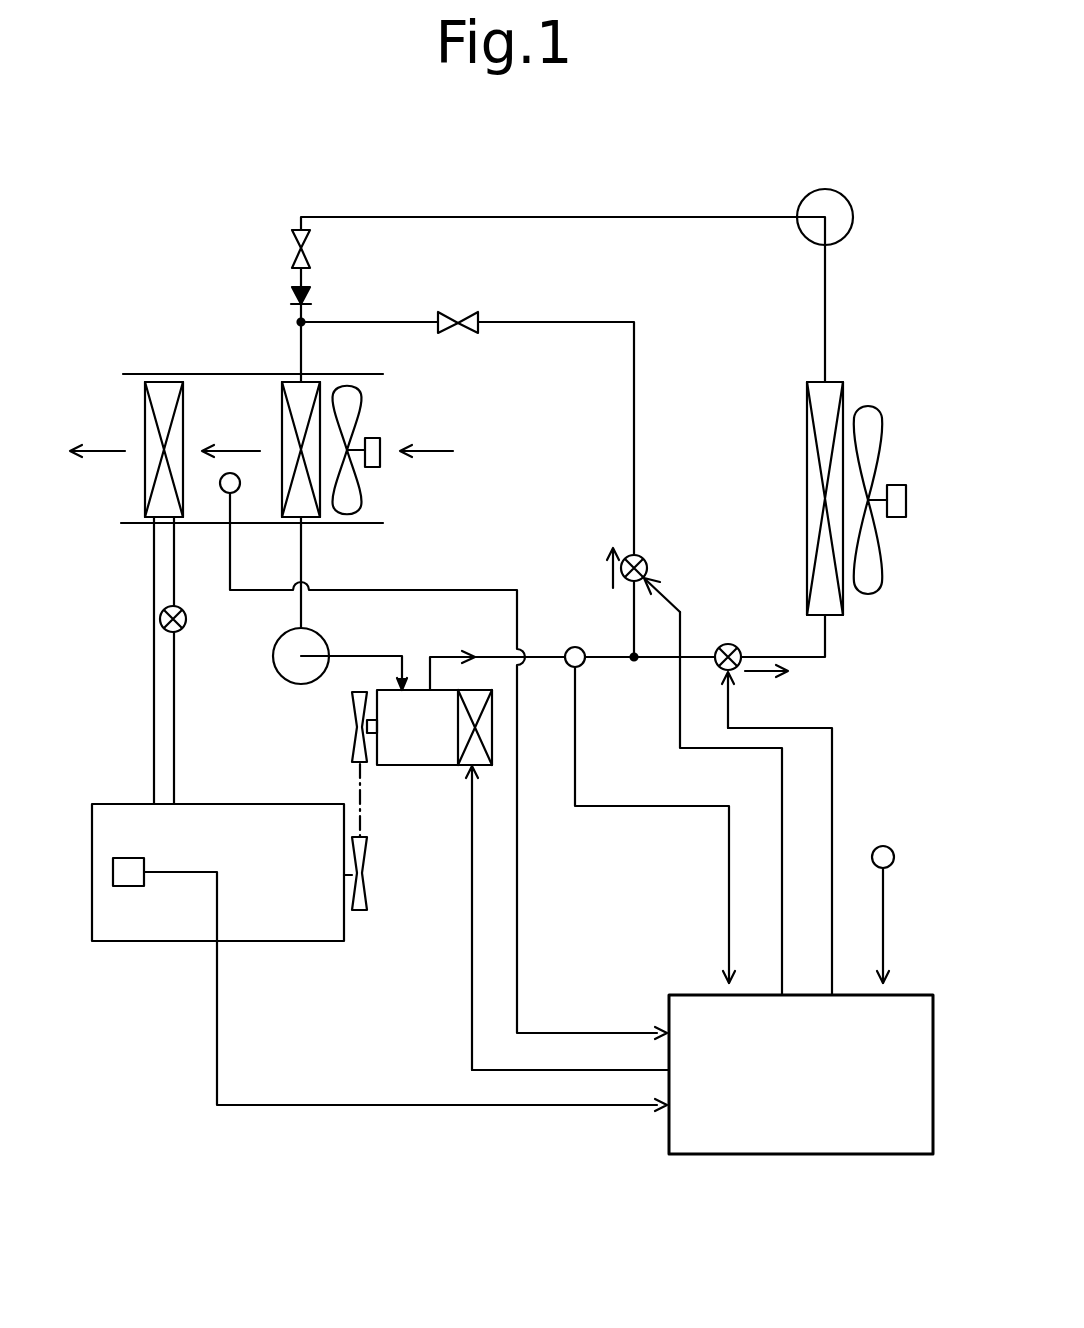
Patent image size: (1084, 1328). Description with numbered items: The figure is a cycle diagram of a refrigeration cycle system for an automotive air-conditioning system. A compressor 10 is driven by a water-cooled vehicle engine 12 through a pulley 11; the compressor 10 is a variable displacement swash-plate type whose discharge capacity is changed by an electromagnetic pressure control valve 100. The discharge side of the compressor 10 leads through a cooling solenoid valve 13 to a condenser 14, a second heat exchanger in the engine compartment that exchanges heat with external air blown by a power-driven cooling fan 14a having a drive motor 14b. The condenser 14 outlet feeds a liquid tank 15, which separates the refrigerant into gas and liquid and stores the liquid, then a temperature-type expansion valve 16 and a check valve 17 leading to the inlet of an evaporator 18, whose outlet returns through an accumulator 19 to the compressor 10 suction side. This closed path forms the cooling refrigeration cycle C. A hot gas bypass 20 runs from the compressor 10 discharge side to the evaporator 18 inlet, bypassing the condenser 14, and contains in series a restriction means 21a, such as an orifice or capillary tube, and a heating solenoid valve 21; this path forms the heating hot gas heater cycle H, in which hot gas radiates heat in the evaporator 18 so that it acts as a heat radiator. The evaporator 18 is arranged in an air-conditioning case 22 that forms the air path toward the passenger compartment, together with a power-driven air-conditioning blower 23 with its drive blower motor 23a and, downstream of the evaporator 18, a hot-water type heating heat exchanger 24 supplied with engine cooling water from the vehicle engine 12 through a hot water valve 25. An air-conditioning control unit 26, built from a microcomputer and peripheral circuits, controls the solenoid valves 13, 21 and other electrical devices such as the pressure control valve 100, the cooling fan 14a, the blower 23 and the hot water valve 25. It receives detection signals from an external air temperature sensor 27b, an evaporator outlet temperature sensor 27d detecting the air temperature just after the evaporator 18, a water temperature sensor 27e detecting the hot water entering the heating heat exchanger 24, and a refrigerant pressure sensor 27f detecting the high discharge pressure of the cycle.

The compressor 10 is at (518, 880).
The electromagnetic pressure control valve 100 is at (488, 736).
The pulley 11 is at (352, 732).
The vehicle engine 12 is at (155, 941).
The cooling solenoid valve 13 is at (728, 644).
The condenser 14 is at (807, 420).
The cooling fan 14a is at (870, 402).
The drive motor 14b is at (897, 485).
The liquid tank 15 is at (848, 196).
The temperature-type expansion valve 16 is at (292, 243).
The check valve 17 is at (292, 297).
The evaporator 18 is at (293, 390).
The accumulator 19 is at (324, 644).
The hot gas bypass 20 is at (583, 322).
The heating solenoid valve 21 is at (646, 563).
The restriction means 21a is at (458, 312).
The air-conditioning case 22 is at (162, 373).
The air-conditioning blower 23 is at (360, 490).
The drive blower motor 23a is at (373, 438).
The heating heat exchanger 24 is at (145, 470).
The hot water valve 25 is at (187, 616).
The air-conditioning control unit 26 is at (669, 1130).
The external air temperature sensor 27b is at (883, 846).
The evaporator outlet temperature sensor 27d is at (232, 493).
The water temperature sensor 27e is at (128, 858).
The refrigerant pressure sensor 27f is at (582, 666).
The heating hot gas heater cycle H is at (640, 355).
The cooling refrigeration cycle C is at (832, 306).